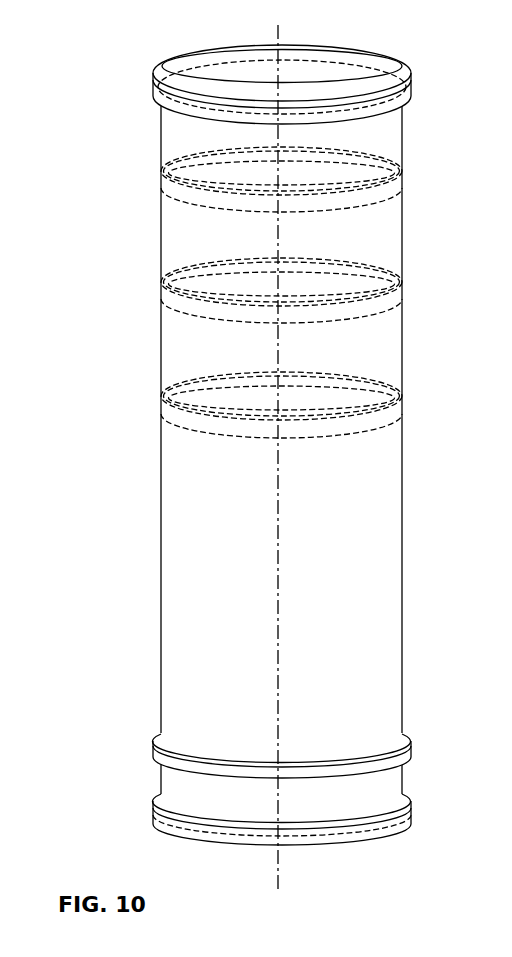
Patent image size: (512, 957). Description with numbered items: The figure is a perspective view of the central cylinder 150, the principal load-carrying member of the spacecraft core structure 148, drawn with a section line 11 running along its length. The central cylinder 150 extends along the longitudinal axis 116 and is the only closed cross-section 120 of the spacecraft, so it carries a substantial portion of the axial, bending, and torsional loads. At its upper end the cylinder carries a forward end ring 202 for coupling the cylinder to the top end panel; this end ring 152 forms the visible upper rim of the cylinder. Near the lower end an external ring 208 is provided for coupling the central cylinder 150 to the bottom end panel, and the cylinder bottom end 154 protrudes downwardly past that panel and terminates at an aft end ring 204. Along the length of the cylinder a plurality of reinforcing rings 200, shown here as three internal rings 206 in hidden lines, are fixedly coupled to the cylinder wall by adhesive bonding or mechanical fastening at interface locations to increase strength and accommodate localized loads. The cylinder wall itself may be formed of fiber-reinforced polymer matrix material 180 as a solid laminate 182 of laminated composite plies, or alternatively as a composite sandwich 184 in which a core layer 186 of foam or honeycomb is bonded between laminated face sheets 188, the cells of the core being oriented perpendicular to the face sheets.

The section line 11- 11 is at (278, 25).
The longitudinal axis 116 is at (278, 138).
The closed cross-section 120 is at (284, 450).
The core structure 148 is at (161, 236).
The central cylinder 150 is at (161, 364).
The top rim 152 is at (284, 84).
The cylinder bottom end 154 is at (278, 819).
The fiber-reinforced polymer matrix material 180 is at (173, 503).
The solid laminate 182 is at (404, 566).
The composite sandwich 184 is at (161, 556).
The core layer 186 is at (161, 608).
The laminated face sheets 188 is at (161, 641).
The reinforcing rings 200 is at (160, 417).
The forward end ring 202 is at (410, 76).
The aft end ring 204 is at (412, 833).
The internal rings 206 is at (284, 292).
The external ring 208 is at (412, 764).